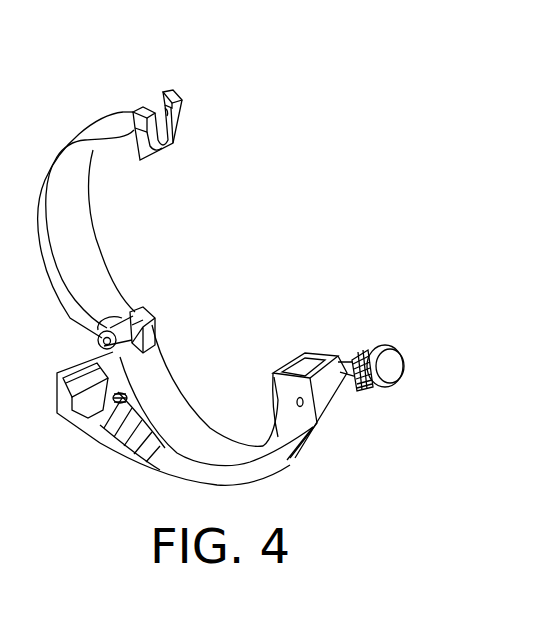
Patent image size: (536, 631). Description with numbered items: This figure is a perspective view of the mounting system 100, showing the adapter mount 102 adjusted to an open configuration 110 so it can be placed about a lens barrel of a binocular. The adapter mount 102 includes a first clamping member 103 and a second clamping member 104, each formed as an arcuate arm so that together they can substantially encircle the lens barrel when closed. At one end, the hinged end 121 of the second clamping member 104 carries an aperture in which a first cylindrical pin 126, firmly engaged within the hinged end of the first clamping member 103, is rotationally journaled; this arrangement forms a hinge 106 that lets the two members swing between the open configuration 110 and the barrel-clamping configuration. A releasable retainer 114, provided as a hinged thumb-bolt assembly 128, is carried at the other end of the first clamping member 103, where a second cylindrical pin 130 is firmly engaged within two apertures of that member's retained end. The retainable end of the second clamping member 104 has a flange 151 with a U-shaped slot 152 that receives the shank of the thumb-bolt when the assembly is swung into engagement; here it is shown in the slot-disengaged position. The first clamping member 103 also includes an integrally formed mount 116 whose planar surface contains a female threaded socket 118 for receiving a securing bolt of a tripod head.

The mounting system 100 is at (322, 48).
The adapter mount 102 is at (316, 106).
The first clamping member 103 is at (297, 458).
The second clamping member 104 is at (65, 192).
The hinge 106 is at (147, 317).
The open configuration 110 is at (325, 159).
The releasable retainer 114 is at (347, 303).
The mount 116 is at (78, 484).
The female threaded socket 118 is at (112, 405).
The hinged end 121 is at (122, 320).
The first cylindrical pin 126 is at (103, 343).
The hinged thumb-bolt assembly 128 is at (381, 345).
The second cylindrical pin 130 is at (296, 403).
The flange 151 is at (160, 93).
The U-shaped slot 152 is at (178, 118).